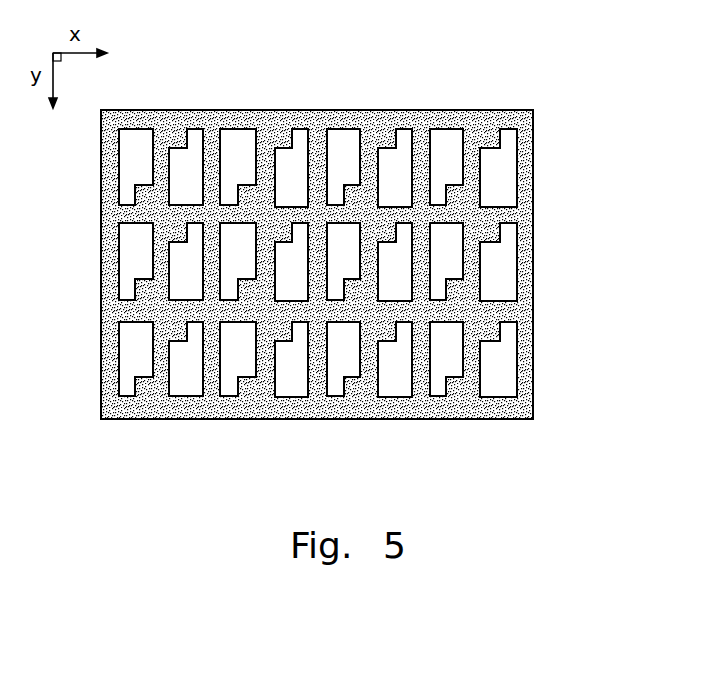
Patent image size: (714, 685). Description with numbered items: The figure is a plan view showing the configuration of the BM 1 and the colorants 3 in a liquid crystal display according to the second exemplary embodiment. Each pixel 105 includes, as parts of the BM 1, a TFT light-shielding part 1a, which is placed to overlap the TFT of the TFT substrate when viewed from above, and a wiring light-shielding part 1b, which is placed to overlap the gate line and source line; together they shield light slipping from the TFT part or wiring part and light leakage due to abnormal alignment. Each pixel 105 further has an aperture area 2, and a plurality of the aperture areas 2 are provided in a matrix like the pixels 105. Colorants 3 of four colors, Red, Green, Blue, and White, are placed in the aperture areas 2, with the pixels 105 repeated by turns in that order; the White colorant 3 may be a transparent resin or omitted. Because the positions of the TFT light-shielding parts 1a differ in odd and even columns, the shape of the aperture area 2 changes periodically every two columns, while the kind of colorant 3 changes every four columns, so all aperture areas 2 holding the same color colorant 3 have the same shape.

The BM 1 is at (468, 96).
The TFT light-shielding part 1a is at (180, 137).
The wiring light-shielding part 1b is at (212, 137).
The aperture area 2 is at (520, 143).
The colorant 3 is at (515, 193).
The pixel 105 is at (530, 259).